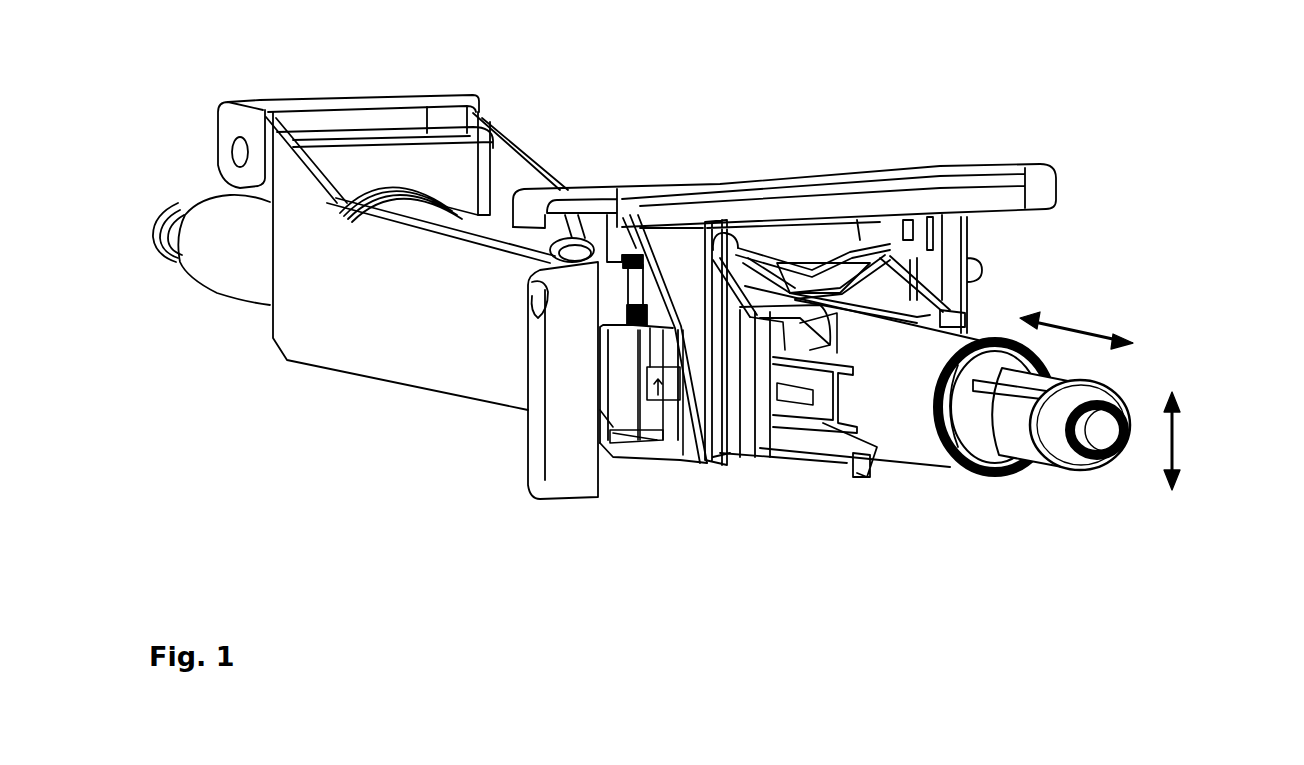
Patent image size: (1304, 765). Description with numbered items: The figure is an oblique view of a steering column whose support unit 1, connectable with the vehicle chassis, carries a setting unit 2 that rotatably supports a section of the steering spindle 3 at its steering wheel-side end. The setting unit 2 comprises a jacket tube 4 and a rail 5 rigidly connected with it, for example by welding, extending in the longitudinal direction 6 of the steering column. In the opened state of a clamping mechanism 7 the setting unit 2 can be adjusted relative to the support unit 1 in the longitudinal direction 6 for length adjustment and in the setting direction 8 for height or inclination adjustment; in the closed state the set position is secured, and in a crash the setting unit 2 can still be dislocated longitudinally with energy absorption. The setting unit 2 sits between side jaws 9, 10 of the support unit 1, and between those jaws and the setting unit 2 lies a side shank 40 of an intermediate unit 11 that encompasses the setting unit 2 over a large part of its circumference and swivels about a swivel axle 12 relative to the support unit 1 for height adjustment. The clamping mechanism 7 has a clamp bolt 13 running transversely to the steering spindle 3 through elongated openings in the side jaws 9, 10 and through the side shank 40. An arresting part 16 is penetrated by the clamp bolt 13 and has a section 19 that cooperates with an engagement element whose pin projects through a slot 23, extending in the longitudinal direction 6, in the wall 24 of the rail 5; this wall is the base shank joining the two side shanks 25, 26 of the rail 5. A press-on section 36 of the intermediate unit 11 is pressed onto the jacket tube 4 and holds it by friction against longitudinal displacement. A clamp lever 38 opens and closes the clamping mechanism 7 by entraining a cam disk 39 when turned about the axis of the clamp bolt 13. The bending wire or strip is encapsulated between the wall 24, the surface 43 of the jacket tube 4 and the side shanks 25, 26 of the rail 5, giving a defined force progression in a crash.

The support unit 1 is at (976, 161).
The setting unit 2 is at (945, 468).
The steering spindle 3 is at (1020, 440).
The jacket tube 4 is at (918, 450).
The rail 5 is at (847, 447).
The longitudinal direction 6 is at (1068, 320).
The clamping mechanism 7 is at (520, 347).
The setting direction 8 is at (1175, 428).
The side jaw 9 is at (673, 457).
The side jaw 10 is at (969, 231).
The intermediate unit 11 is at (492, 405).
The swivel axle 12 is at (527, 123).
The clamp bolt 13 is at (810, 273).
The arresting part 16 is at (655, 402).
The section 19 is at (673, 455).
The slot 23 is at (806, 440).
The wall 24 is at (826, 450).
The side shank 25 is at (835, 290).
The side shank 26 is at (858, 432).
The press-on section 36 is at (775, 283).
The clamp lever 38 is at (568, 440).
The cam disk 39 is at (612, 452).
The side shank 40 is at (737, 437).
The surface 43 is at (784, 435).